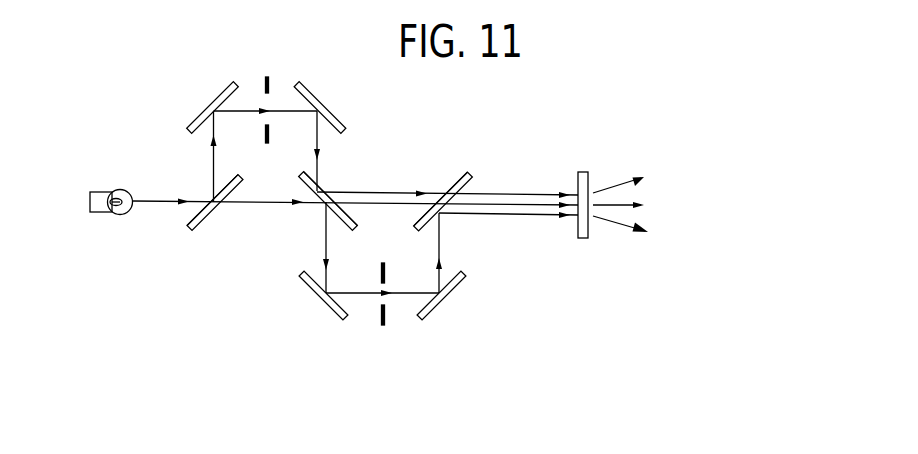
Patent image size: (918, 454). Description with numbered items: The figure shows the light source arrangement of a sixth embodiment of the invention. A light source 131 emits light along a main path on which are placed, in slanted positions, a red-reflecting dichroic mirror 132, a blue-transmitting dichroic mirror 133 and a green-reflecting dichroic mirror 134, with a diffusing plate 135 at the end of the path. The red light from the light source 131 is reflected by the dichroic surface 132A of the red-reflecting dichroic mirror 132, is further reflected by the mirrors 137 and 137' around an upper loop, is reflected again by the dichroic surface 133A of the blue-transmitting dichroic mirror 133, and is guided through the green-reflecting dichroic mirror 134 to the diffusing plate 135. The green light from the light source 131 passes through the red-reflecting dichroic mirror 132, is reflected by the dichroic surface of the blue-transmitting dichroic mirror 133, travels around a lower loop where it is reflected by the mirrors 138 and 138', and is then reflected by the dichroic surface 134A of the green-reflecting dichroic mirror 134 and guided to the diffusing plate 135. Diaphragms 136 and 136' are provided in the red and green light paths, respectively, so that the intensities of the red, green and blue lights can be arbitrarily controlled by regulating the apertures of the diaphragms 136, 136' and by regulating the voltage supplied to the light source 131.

The light source 131 is at (100, 195).
The red-reflecting dichroic mirror 132 is at (193, 233).
The dichroic surface 132A is at (190, 217).
The blue-transmitting dichroic mirror 133 is at (348, 232).
The dichroic surface 133A is at (302, 180).
The green-reflecting dichroic mirror 134 is at (415, 233).
The dichroic surface 134A is at (470, 185).
The diffusing plate 135 is at (583, 172).
The diaphragm 136 is at (297, 97).
The diaphragm 136' is at (354, 314).
The mirror 137 is at (185, 102).
The mirror 137' is at (344, 103).
The mirror 138 is at (303, 303).
The mirror 138' is at (462, 304).